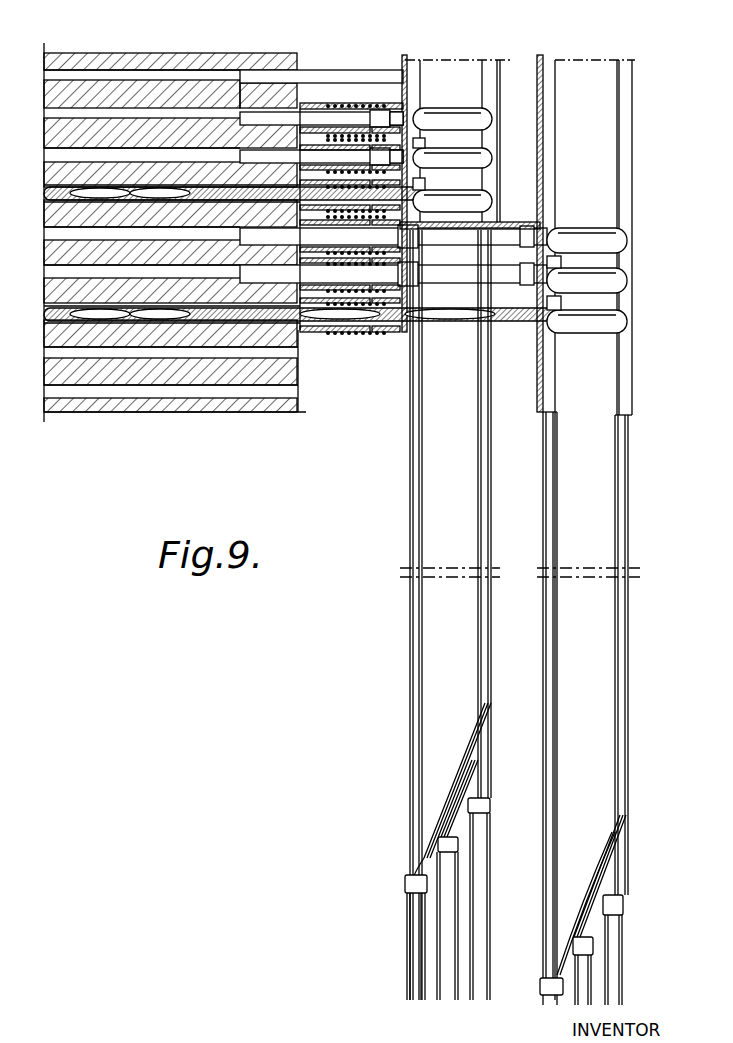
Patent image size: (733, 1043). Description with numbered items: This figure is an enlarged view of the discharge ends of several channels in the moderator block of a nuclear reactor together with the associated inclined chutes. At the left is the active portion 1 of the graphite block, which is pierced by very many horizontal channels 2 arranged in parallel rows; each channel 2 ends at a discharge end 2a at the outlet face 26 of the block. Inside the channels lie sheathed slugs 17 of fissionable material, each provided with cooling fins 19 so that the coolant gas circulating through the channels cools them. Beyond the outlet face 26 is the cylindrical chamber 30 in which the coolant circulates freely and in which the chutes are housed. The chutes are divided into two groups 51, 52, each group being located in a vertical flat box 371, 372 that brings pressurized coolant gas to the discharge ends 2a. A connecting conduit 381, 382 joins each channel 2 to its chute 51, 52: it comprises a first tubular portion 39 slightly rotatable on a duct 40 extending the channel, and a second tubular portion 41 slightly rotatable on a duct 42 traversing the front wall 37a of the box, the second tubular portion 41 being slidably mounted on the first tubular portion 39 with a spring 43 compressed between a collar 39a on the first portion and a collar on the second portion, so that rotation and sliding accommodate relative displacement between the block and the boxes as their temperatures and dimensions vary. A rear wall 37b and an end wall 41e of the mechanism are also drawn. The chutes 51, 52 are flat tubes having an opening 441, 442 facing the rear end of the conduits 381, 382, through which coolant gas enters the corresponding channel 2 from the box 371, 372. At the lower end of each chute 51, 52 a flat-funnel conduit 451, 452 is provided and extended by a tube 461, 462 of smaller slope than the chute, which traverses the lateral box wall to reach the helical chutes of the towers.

The active portion 1 is at (172, 368).
The horizontal channel 2 is at (208, 178).
The discharge end 2a is at (302, 103).
The sheathed slug 17 is at (72, 191).
The cooling fin 19 is at (100, 196).
The outlet face 26 is at (300, 376).
The cylindrical chamber 30 is at (534, 176).
The front wall 37a is at (408, 77).
The housing wall 37b is at (500, 88).
The vertical flat box 371 is at (460, 189).
The vertical flat box 372 is at (608, 157).
The connecting conduit 381 is at (348, 102).
The connecting conduit 382 is at (357, 334).
The first tubular portion 39 is at (332, 103).
The collar 39a is at (318, 103).
The duct 40 is at (304, 103).
The second tubular portion 41 is at (374, 103).
The end wall 41e is at (398, 103).
The duct 42 is at (405, 102).
The spring 43 is at (362, 103).
The opening 441 is at (427, 109).
The opening 442 is at (550, 230).
The inclined chute 51 is at (467, 130).
The inclined chute 52 is at (603, 252).
The conduit 451 is at (437, 788).
The conduit 452 is at (572, 868).
The tube 461 is at (415, 958).
The tube 462 is at (615, 961).